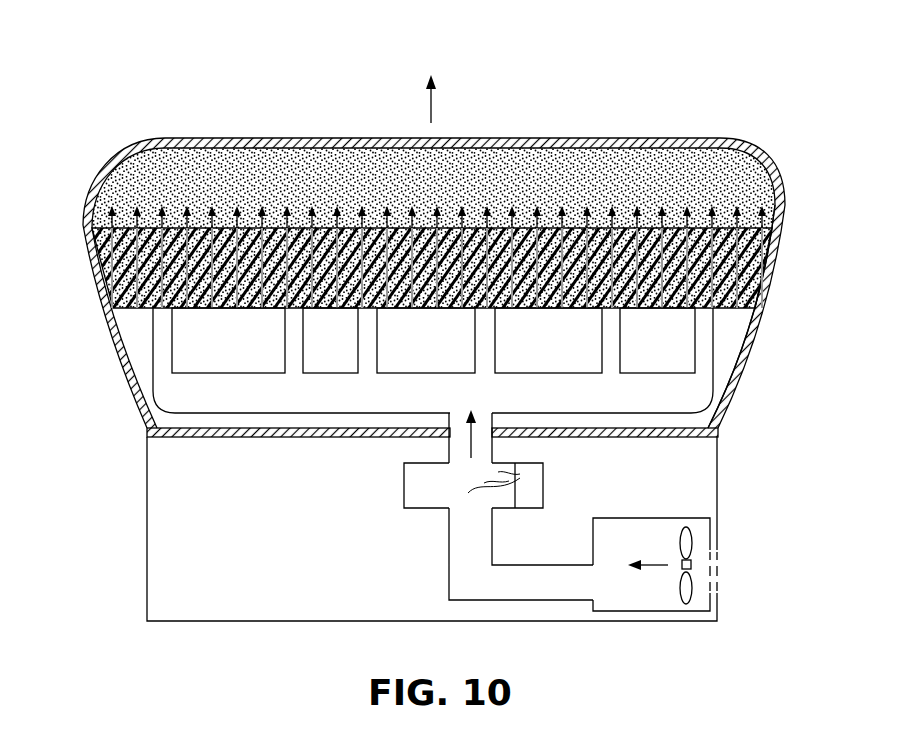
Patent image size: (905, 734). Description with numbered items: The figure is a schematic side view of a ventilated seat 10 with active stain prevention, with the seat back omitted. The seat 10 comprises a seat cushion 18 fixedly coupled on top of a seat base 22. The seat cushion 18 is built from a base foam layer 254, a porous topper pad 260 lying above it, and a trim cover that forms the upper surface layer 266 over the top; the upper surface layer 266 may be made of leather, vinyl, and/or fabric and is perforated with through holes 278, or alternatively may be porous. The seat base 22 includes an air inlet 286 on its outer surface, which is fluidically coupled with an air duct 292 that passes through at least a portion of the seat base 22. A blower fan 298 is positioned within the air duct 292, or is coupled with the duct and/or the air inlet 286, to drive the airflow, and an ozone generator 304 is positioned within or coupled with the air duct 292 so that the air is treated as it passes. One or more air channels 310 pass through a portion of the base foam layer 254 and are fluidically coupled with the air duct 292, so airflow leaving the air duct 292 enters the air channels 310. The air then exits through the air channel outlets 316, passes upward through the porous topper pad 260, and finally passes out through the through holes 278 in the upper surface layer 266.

The ventilated seat 10 is at (756, 100).
The seat cushion 18 is at (106, 338).
The seat base 22 is at (140, 538).
The base foam layer 254 is at (728, 361).
The porous topper pad 260 is at (625, 168).
The upper surface layer 266 is at (273, 138).
The through holes 278 is at (218, 138).
The air inlet 286 is at (720, 550).
The air duct 292 is at (449, 561).
The blower fan 298 is at (687, 596).
The ozone generator 304 is at (535, 483).
The air channels 310 is at (165, 385).
The air channel outlets 316 is at (705, 340).